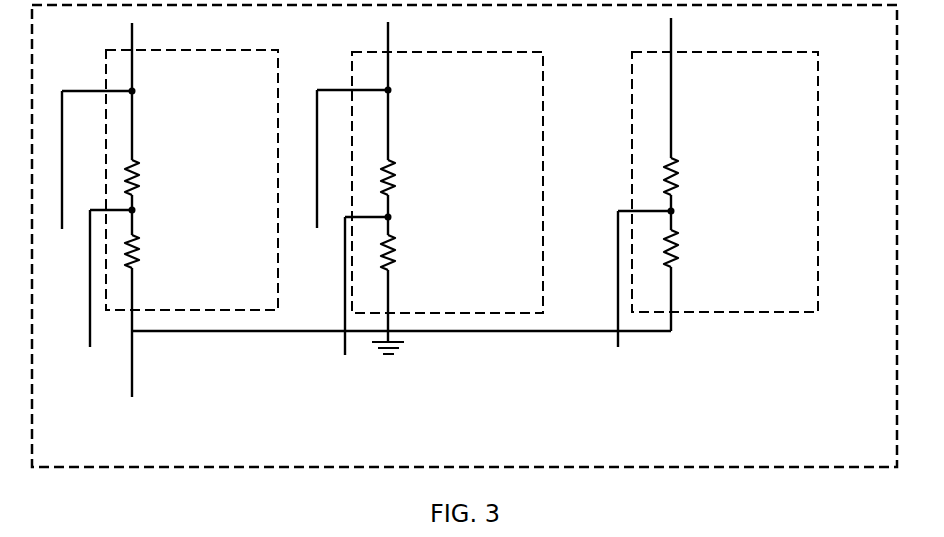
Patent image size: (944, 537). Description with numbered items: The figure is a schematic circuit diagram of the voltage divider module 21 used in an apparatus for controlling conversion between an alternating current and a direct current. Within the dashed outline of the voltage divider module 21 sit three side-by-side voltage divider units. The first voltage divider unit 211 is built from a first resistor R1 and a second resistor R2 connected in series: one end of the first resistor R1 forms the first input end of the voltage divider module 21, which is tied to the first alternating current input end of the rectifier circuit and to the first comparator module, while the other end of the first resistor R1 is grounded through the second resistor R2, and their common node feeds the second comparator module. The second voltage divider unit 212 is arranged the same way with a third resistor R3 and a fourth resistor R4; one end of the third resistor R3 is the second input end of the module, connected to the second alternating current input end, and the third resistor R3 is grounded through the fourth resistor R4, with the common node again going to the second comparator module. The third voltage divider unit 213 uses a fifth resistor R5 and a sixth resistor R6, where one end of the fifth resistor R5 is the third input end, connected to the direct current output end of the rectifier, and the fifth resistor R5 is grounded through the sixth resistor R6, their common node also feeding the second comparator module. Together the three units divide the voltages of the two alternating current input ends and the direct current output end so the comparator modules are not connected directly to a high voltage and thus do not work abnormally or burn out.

The voltage divider module 21 is at (464, 236).
The first voltage divider unit 211 is at (170, 210).
The second voltage divider unit 212 is at (430, 188).
The third voltage divider unit 213 is at (718, 182).
The first resistor R1 is at (156, 177).
The second resistor R2 is at (156, 251).
The third resistor R3 is at (413, 177).
The fourth resistor R4 is at (413, 252).
The fifth resistor R5 is at (691, 176).
The sixth resistor R6 is at (692, 248).